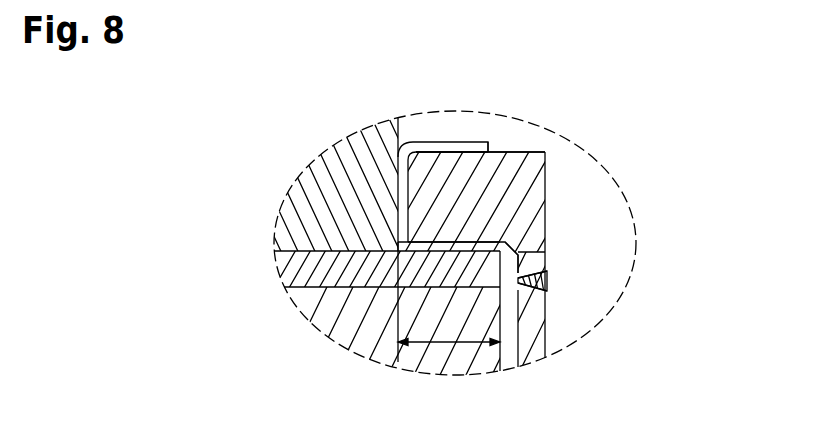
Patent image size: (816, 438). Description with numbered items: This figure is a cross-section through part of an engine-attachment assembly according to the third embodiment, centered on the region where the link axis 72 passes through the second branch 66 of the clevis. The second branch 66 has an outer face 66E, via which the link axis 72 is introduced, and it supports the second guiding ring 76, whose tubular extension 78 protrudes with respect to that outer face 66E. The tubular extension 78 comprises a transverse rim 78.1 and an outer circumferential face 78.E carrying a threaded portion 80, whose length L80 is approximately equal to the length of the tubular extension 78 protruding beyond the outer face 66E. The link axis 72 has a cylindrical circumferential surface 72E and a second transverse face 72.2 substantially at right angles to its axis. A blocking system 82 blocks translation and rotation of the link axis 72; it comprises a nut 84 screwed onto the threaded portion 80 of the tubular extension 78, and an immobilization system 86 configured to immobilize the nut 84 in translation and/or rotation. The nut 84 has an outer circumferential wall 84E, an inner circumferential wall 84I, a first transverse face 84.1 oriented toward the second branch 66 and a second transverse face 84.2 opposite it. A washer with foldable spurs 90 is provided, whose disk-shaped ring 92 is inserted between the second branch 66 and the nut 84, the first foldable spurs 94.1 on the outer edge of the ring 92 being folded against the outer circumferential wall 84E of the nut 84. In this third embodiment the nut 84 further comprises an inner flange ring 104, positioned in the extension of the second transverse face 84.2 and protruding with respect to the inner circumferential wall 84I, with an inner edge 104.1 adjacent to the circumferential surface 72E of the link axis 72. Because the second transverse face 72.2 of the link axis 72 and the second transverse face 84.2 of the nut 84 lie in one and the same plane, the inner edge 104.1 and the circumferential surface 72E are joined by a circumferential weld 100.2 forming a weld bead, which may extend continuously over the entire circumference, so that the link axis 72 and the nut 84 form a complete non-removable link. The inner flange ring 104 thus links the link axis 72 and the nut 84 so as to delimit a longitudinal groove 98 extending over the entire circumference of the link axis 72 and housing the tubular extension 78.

The second branch 66 is at (366, 139).
The outer face 66E is at (414, 113).
The ring 92 is at (398, 160).
The first transverse face 84.1 is at (408, 174).
The washer with foldable spurs 90 is at (398, 220).
The immobilization system 86 is at (445, 140).
The first foldable spurs 94.1 is at (463, 142).
The nut 84 is at (468, 183).
The blocking system 82 is at (518, 145).
The outer circumferential wall 84E is at (545, 162).
The threaded portion 80 is at (478, 190).
The second transverse face 84.2 is at (518, 194).
The outer circumferential face 78.E is at (462, 235).
The transverse rim 78.1 is at (512, 258).
The inner flange ring 104 is at (520, 264).
The circumferential weld 100.2 is at (553, 282).
The inner edge 104.1 is at (546, 308).
The second transverse face 72.2 is at (550, 348).
The longitudinal groove 98 is at (507, 290).
The link axis 72 is at (378, 362).
The tubular extension 78 is at (374, 359).
The second guiding ring 76 is at (296, 286).
The inner circumferential wall 84I is at (468, 277).
The cylindrical circumferential surface 72E is at (300, 251).
The length of the threaded portion L80 is at (449, 328).